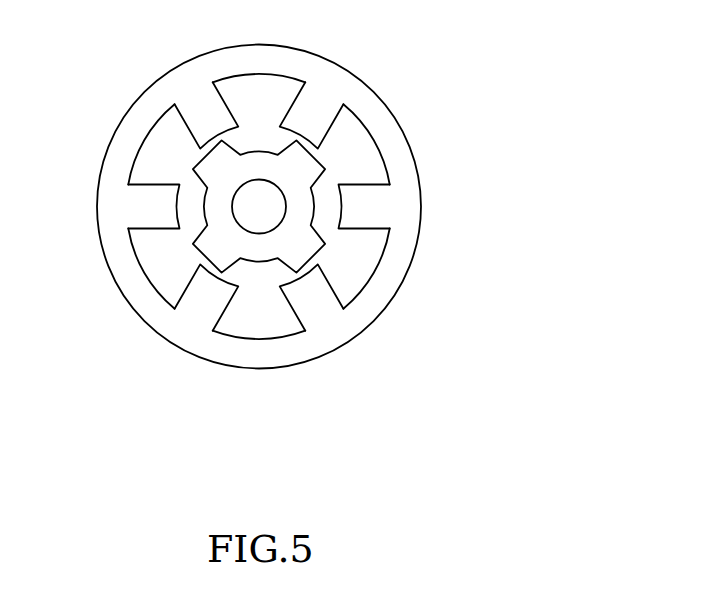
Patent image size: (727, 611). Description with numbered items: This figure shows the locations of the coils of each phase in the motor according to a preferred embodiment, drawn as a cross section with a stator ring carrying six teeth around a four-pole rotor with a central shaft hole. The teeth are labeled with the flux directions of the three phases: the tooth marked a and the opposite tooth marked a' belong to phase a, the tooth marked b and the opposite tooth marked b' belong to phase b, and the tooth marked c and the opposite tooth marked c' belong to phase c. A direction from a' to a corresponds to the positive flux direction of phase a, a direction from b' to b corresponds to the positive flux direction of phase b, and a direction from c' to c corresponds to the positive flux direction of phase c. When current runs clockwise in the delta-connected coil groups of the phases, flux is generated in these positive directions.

The flux direction a is at (398, 207).
The flux direction a' is at (112, 207).
The flux direction b is at (194, 88).
The flux direction b' is at (321, 329).
The flux direction c is at (197, 326).
The flux direction c' is at (324, 88).